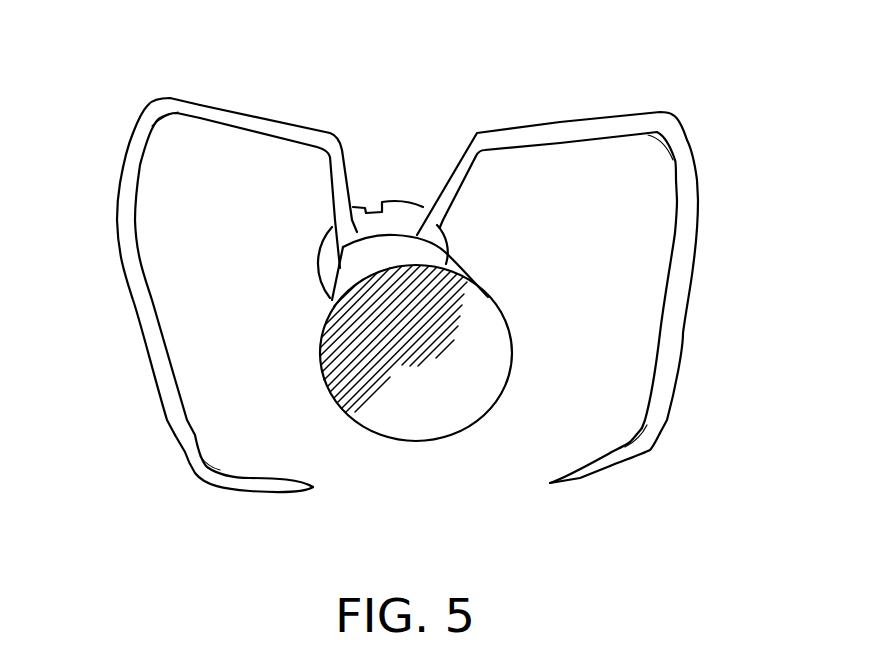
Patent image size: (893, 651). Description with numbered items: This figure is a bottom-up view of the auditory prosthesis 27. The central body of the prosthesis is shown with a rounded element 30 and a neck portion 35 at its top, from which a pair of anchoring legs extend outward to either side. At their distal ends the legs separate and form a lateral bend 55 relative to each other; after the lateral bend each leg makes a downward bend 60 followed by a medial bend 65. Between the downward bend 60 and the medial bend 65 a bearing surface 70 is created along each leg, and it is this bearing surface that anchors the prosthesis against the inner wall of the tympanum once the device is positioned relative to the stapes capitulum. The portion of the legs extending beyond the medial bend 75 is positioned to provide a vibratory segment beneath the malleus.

The auditory prosthesis 27 is at (511, 42).
The ball 30 is at (504, 300).
The neck / mounting stem 35 is at (385, 202).
The lateral bend 55 is at (335, 138).
The downward bend 60 is at (148, 105).
The medial bend 65 is at (193, 465).
The bearing surface 70 is at (110, 150).
The portion of the anchoring legs extending beyond the medial bend 75 is at (300, 491).